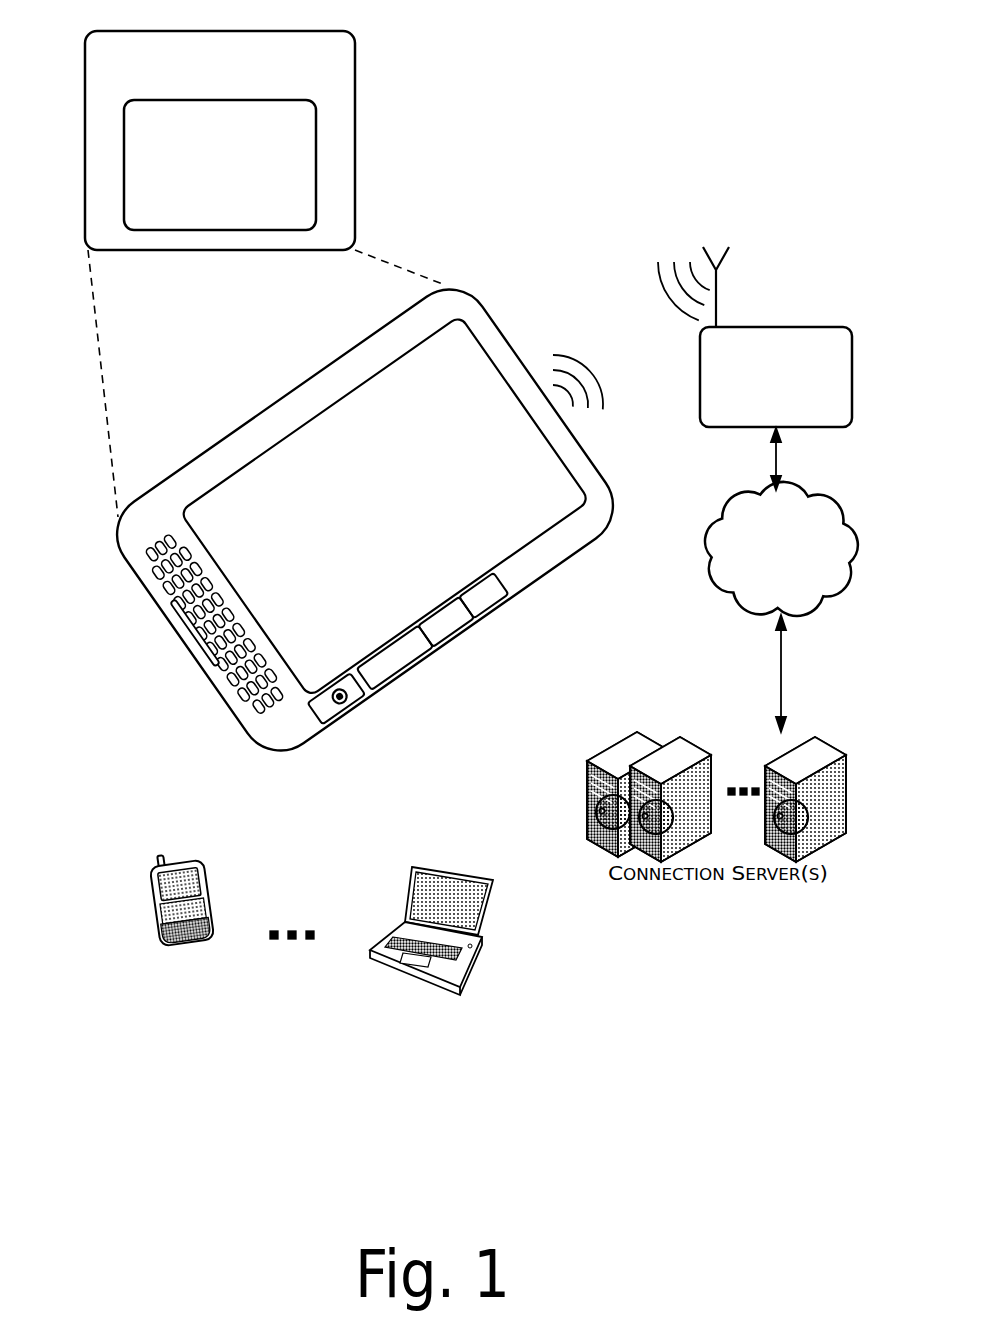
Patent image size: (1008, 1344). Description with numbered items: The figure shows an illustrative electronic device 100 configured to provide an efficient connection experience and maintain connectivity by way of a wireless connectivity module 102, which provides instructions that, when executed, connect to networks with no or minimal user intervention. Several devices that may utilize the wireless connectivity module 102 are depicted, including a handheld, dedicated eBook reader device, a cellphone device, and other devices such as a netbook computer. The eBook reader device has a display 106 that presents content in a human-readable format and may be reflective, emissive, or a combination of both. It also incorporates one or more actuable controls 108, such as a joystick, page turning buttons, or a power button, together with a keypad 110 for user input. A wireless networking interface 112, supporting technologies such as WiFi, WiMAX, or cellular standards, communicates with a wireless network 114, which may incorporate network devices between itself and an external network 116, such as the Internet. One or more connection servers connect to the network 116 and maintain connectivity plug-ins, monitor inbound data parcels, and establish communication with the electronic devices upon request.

The electronic device 100 is at (204, 88).
The wireless connectivity module 102 is at (204, 213).
The display 106 is at (427, 375).
The actuable controls 108 is at (415, 660).
The keypad 110 is at (180, 602).
The wireless networking interface 112 is at (548, 423).
The wireless network 114 is at (760, 414).
The network 116 is at (765, 574).